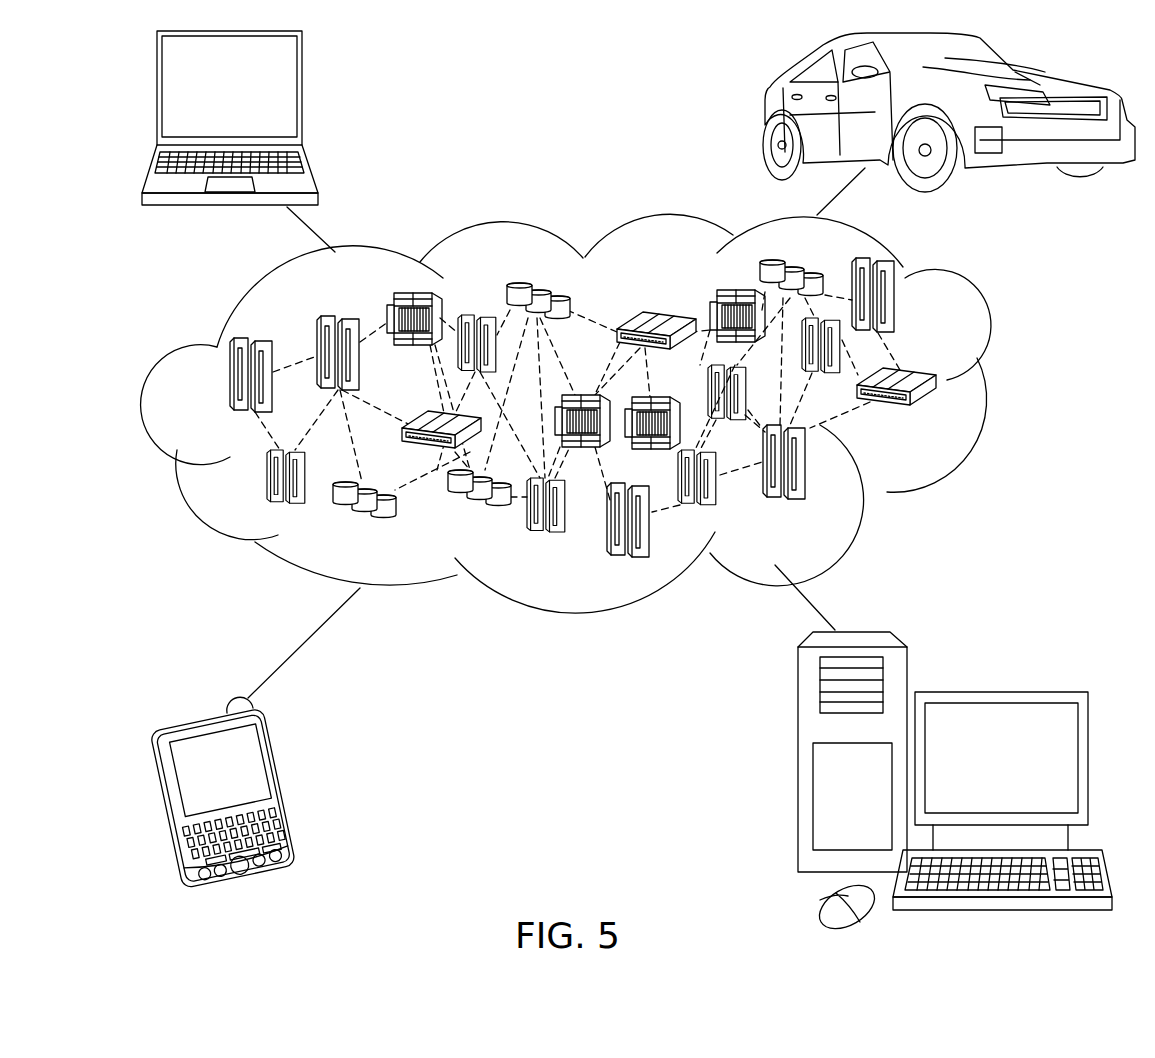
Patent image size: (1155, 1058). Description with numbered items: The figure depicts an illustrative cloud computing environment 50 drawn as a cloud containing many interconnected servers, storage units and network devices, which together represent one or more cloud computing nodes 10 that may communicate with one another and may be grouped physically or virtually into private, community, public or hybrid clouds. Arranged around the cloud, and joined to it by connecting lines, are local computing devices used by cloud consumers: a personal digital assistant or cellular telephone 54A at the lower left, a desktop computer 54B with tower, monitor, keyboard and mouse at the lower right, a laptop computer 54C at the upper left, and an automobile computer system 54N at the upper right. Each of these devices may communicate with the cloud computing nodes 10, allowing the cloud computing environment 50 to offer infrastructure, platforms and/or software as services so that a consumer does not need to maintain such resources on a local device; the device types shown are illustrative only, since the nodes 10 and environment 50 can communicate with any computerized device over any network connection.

The cloud computing node 10 is at (950, 426).
The cloud computing environment 50 is at (1001, 386).
The personal digital assistant or cellular telephone 54A is at (292, 790).
The desktop computer 54B is at (998, 692).
The laptop computer 54C is at (302, 96).
The automobile computer system 54N is at (768, 112).